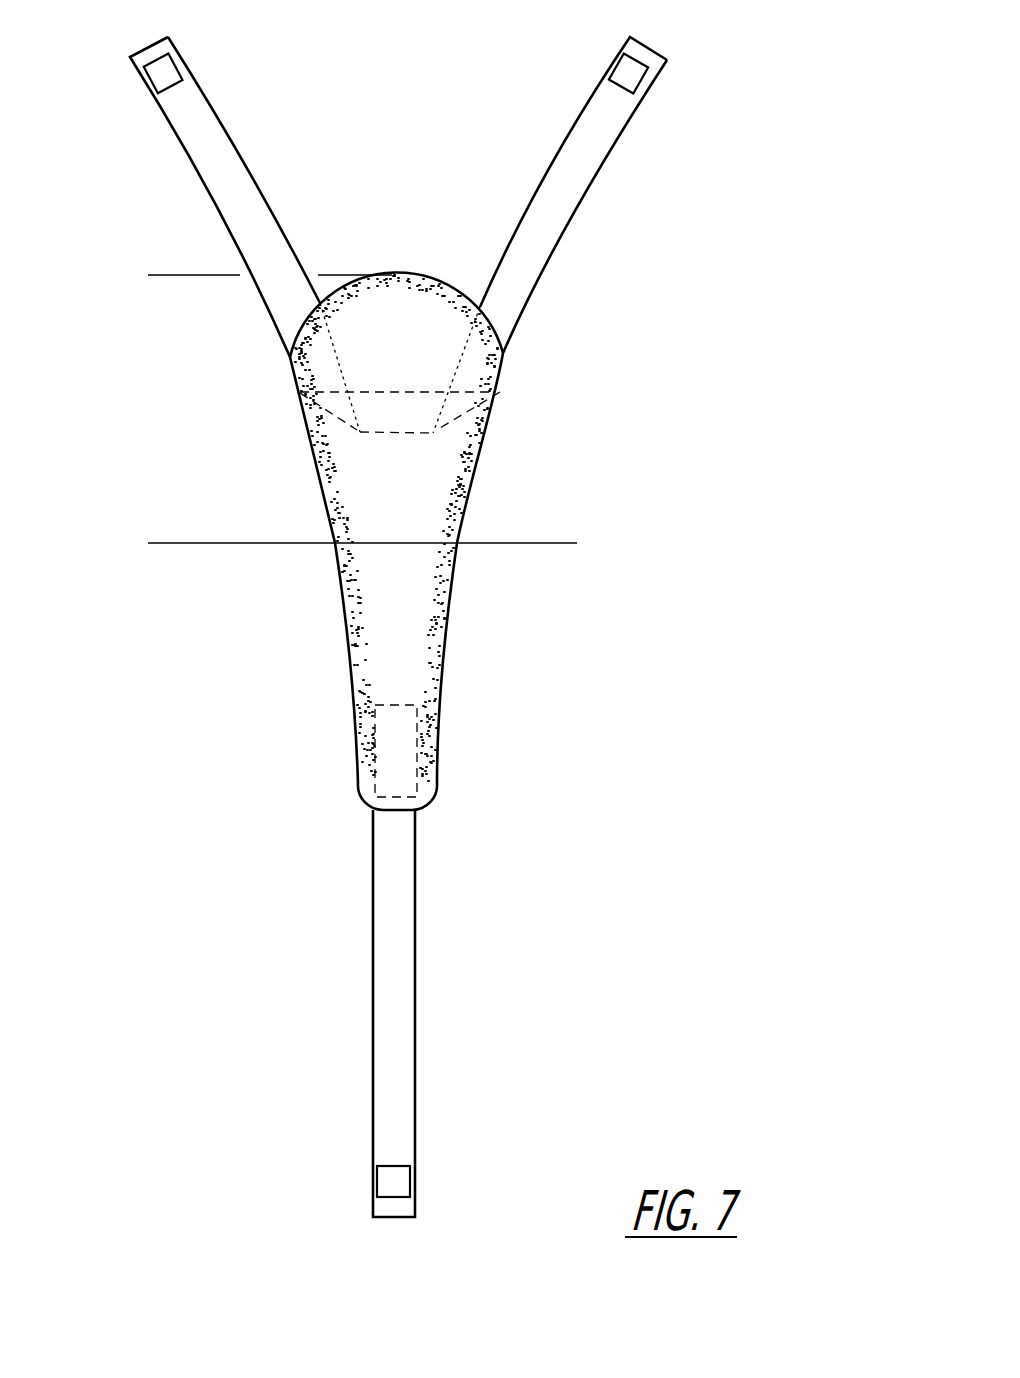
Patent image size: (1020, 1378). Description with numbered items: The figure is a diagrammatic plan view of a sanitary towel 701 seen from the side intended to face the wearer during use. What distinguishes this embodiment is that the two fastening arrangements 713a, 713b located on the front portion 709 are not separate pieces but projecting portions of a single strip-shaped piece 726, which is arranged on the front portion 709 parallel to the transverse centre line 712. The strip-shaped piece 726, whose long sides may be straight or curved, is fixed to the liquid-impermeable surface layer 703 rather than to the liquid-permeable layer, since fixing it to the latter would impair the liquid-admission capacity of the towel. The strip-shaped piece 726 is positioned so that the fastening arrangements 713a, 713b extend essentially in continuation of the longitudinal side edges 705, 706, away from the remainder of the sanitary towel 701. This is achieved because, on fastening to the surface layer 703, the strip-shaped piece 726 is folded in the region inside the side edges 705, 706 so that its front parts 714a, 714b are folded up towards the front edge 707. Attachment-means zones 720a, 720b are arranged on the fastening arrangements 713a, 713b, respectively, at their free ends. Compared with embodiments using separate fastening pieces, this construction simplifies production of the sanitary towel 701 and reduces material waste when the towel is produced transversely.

The sanitary towel 701 is at (732, 36).
The liquid-impermeable surface layer 703 is at (410, 488).
The longitudinal side edge 705 is at (455, 613).
The longitudinal side edge 706 is at (341, 613).
The front edge 707 is at (411, 266).
The front portion 709 is at (145, 543).
The transverse centre line 712 is at (512, 543).
The fastening arrangement 713a is at (606, 175).
The fastening arrangement 713b is at (176, 157).
The front part 714a is at (542, 242).
The front part 714b is at (224, 204).
The attachment-means zone 720a is at (645, 81).
The attachment-means zone 720b is at (150, 80).
The strip-shaped piece 726 is at (404, 424).